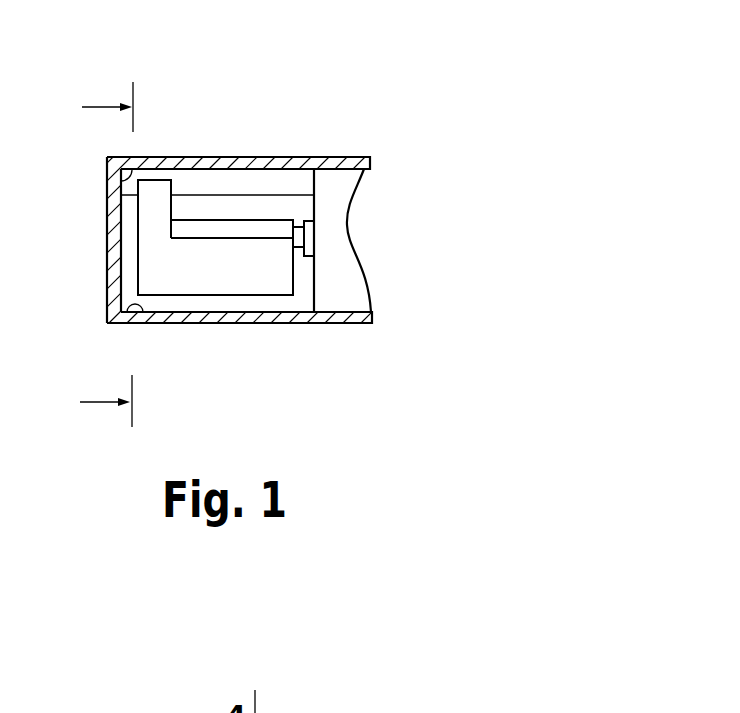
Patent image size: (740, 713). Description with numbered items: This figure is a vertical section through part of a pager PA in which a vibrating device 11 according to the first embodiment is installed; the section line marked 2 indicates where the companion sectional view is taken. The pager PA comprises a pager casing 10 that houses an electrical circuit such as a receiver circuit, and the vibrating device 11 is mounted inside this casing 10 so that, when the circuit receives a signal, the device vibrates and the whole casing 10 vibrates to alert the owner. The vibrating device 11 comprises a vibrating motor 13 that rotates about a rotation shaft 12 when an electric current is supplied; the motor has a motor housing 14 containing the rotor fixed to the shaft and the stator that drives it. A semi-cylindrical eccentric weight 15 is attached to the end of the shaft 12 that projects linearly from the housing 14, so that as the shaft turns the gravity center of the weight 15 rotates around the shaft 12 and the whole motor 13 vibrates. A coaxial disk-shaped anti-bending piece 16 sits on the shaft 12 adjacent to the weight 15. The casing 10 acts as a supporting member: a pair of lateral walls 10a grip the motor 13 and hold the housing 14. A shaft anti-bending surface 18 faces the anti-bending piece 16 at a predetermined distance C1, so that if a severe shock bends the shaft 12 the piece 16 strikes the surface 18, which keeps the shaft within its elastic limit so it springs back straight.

The pager PA is at (367, 65).
The pager casing 10 is at (233, 148).
The lateral walls 10a is at (352, 158).
The vibrating device 11 is at (302, 310).
The rotation shaft 12 is at (297, 236).
The vibrating motor 13 is at (354, 302).
The motor housing 14 is at (327, 160).
The eccentric weight 15 is at (235, 280).
The anti-bending piece 16 is at (163, 199).
The shaft anti-bending surface 18 is at (112, 178).
The predetermined distance C1 is at (157, 175).
The section line 2- 2 is at (118, 254).